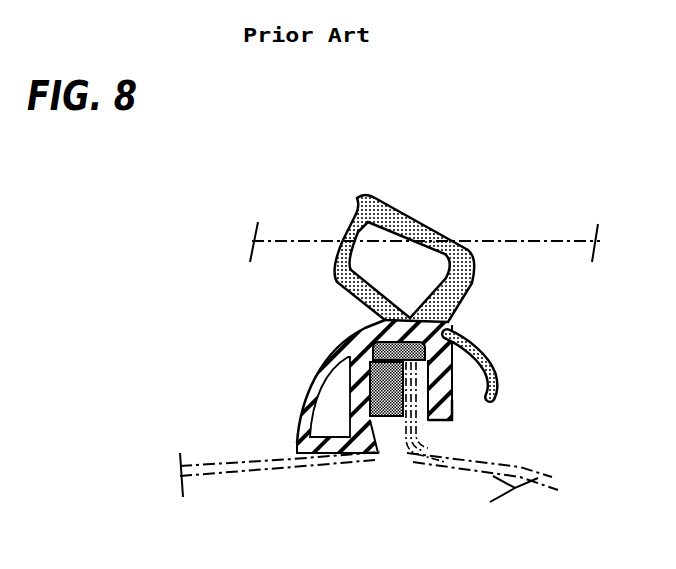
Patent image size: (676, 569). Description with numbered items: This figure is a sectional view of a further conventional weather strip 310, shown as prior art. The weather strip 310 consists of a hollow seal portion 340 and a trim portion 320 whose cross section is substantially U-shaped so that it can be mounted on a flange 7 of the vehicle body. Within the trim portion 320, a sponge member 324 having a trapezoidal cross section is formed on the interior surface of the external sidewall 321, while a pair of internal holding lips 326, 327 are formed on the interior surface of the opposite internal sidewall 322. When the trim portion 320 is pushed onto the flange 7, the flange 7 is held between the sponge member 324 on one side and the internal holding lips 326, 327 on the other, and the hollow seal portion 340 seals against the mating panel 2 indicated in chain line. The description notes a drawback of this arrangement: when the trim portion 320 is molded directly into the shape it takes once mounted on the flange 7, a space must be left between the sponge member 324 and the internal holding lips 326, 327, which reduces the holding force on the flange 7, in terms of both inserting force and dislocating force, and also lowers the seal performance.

The door panel 2 is at (312, 243).
The flange 7 is at (550, 482).
The weather strip 310 is at (407, 371).
The trim portion 320 is at (448, 327).
The external sidewall 321 is at (350, 390).
The internal sidewall 322 is at (452, 396).
The sponge member 324 is at (383, 418).
The internal holding lip 326 is at (453, 417).
The internal holding lip 327 is at (497, 382).
The hollow seal portion 340 is at (450, 297).